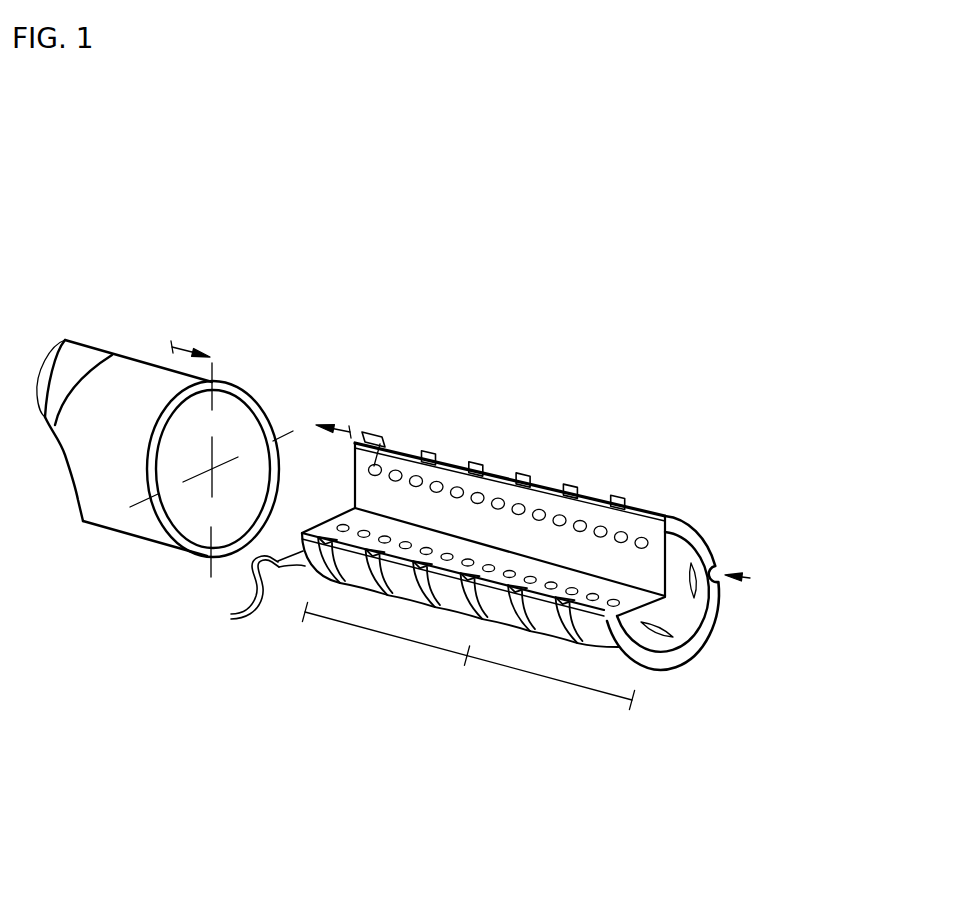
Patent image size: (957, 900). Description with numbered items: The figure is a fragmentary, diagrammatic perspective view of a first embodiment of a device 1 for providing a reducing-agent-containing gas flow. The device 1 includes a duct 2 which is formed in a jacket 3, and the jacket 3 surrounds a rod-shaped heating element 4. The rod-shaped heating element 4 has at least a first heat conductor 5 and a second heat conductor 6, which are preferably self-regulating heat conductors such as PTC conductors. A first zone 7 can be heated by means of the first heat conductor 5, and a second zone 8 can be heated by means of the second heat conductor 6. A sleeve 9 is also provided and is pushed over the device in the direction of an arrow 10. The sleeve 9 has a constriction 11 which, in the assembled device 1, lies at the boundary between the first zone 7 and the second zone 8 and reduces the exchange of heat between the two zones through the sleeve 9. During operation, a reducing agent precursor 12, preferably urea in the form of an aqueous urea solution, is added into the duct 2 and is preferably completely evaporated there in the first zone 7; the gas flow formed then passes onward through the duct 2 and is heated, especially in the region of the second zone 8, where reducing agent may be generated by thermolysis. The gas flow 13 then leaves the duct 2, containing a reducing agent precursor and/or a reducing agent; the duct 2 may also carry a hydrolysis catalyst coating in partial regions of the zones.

The device 1 is at (514, 438).
The duct 2 is at (428, 451).
The jacket 3 is at (677, 530).
The rod-shaped heating element 4 is at (705, 616).
The first heat conductor 5 is at (580, 526).
The second heat conductor 6 is at (384, 442).
The first zone 7 is at (552, 680).
The second zone 8 is at (386, 640).
The sleeve 9 is at (123, 516).
The arrow 10 is at (172, 348).
The constriction 11 is at (125, 352).
The reducing agent precursor 12 is at (750, 578).
The gas flow 13 is at (350, 432).